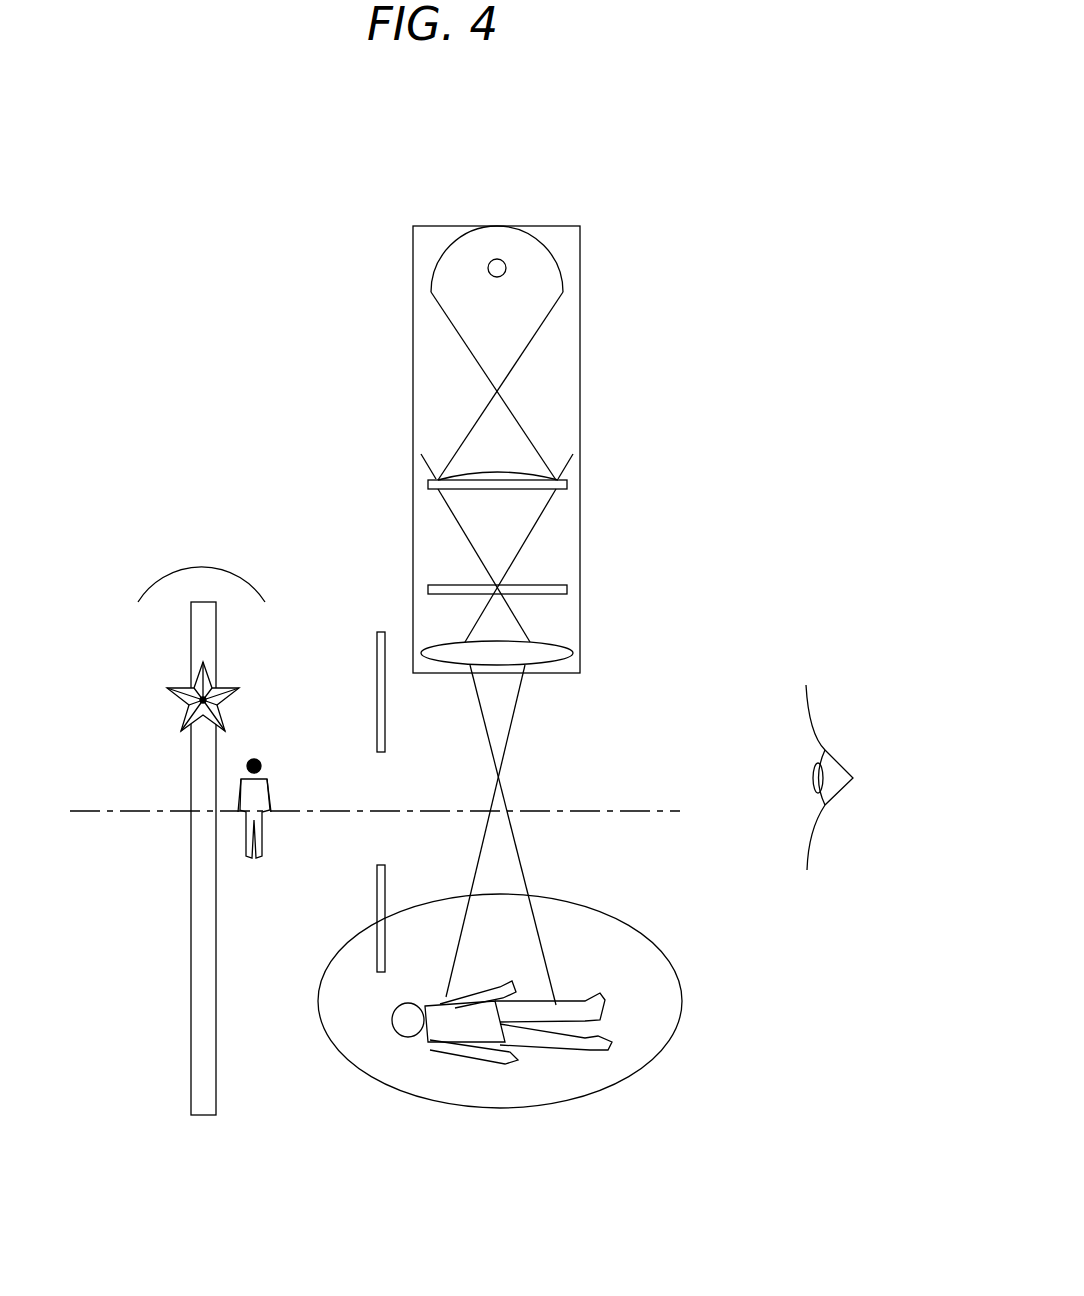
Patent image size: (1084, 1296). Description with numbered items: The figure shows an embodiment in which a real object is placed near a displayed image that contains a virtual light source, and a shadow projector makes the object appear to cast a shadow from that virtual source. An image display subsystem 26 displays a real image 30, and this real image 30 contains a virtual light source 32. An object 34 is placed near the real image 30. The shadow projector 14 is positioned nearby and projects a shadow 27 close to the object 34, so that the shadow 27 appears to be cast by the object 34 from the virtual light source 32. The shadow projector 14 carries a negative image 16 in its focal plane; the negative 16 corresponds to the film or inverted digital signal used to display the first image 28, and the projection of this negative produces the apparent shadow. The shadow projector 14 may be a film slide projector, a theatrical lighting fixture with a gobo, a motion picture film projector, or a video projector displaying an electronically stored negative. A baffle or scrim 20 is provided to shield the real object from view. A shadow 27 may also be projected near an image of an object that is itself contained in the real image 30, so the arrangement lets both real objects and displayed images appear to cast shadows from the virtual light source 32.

The shadow projector 14 is at (580, 362).
The negative image 16 is at (567, 589).
The baffle or scrim 20 is at (378, 632).
The image display subsystem 26 is at (223, 568).
The shadow 27 is at (615, 957).
The first image 28 is at (203, 793).
The real image 30 is at (203, 1040).
The virtual light source 32 is at (167, 690).
The object 34 is at (267, 780).